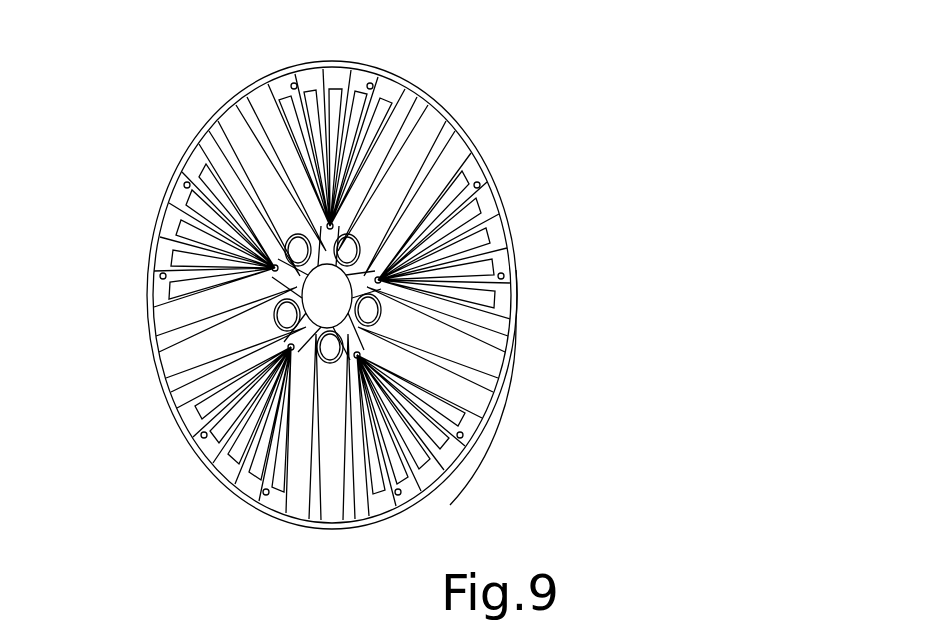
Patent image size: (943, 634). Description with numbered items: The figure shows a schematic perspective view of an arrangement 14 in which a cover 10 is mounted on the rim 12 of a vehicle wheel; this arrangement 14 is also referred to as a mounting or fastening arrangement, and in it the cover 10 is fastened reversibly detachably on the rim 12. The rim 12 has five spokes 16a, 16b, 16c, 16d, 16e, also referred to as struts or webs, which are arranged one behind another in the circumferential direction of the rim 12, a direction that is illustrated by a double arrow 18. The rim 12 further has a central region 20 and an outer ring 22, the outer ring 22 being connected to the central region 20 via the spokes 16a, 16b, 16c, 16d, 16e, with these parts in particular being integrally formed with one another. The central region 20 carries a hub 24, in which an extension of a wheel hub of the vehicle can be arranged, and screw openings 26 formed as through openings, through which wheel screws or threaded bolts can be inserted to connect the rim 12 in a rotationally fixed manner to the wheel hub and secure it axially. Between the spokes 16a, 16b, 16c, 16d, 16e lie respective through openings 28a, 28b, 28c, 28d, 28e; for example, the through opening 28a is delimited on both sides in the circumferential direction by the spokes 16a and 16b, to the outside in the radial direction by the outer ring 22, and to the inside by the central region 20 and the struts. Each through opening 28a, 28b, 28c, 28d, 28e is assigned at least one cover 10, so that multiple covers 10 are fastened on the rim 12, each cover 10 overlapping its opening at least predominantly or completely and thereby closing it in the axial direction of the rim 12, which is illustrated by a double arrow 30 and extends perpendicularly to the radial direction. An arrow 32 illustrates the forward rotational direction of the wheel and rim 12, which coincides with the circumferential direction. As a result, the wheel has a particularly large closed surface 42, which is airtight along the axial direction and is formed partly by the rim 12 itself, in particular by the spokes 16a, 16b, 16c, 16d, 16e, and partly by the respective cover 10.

The cover 10 is at (371, 264).
The rim 12 is at (441, 98).
The arrangement 14 is at (334, 67).
The spoke 16a is at (505, 360).
The spoke 16b is at (430, 122).
The spoke 16c is at (228, 110).
The spoke 16d is at (164, 360).
The spoke 16e is at (336, 503).
The double arrow 18 is at (528, 199).
The central region 20 is at (393, 327).
The outer ring 22 is at (500, 396).
The hub 24 is at (305, 291).
The screw openings 26 is at (326, 352).
The through opening 28a is at (487, 236).
The through opening 28b is at (384, 77).
The through opening 28c is at (172, 193).
The through opening 28d is at (157, 441).
The through opening 28e is at (432, 481).
The double arrow 30 is at (559, 323).
The arrow 32 is at (221, 83).
The closed surface 42 is at (486, 438).